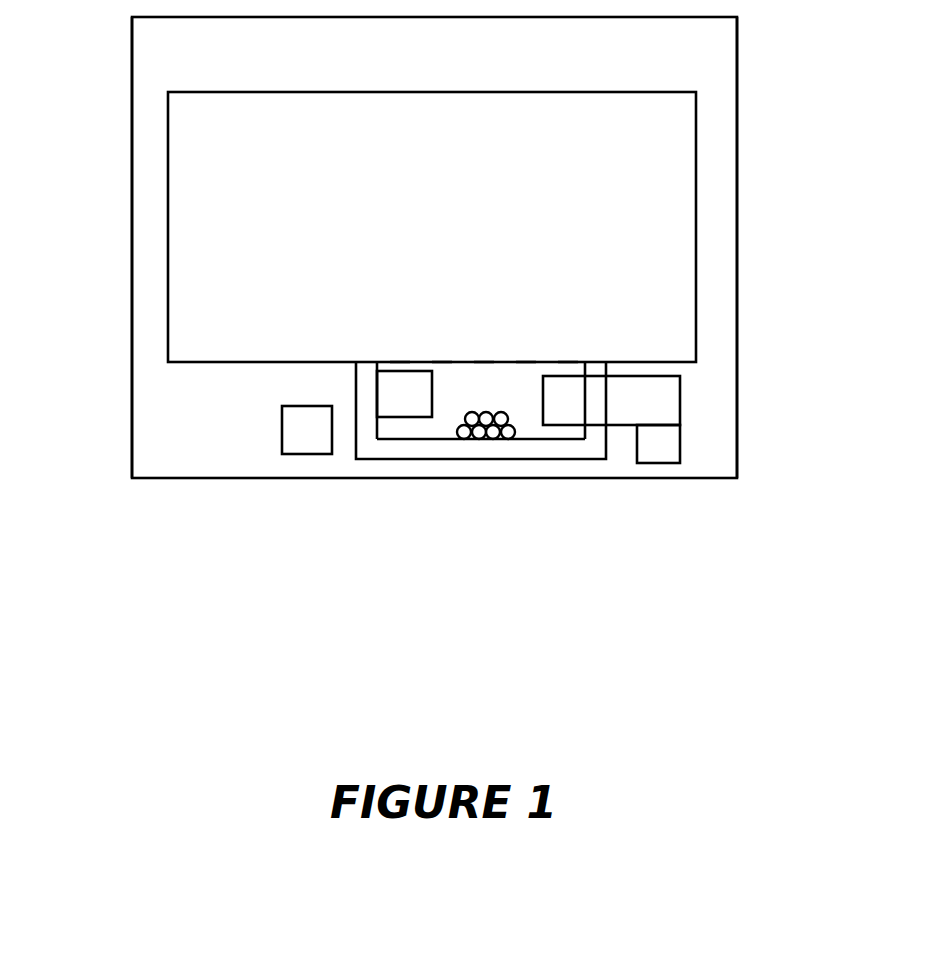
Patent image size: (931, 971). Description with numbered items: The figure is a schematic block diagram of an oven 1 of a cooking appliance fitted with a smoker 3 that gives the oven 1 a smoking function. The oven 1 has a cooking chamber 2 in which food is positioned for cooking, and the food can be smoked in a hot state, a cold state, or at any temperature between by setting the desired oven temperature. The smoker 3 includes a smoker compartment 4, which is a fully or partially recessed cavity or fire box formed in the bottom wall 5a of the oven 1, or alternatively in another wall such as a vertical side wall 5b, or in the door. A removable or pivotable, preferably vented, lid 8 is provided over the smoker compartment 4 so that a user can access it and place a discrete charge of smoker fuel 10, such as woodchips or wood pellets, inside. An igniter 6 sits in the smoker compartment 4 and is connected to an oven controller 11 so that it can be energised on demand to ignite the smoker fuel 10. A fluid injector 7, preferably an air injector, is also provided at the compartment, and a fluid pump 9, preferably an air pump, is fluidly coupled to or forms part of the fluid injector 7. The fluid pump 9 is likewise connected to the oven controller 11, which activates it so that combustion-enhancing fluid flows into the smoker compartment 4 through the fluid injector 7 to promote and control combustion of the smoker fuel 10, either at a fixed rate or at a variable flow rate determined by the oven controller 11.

The oven 1 is at (434, 247).
The cooking chamber 2 is at (432, 227).
The smoker 3 is at (558, 460).
The smoker compartment 4 is at (400, 440).
The bottom wall 5a is at (195, 420).
The side wall 5b is at (147, 132).
The igniter 6 is at (393, 382).
The fluid injector 7 is at (680, 393).
The lid 8 is at (515, 362).
The fluid pump 9 is at (680, 447).
The smoker fuel 10 is at (478, 432).
The oven controller 11 is at (295, 445).